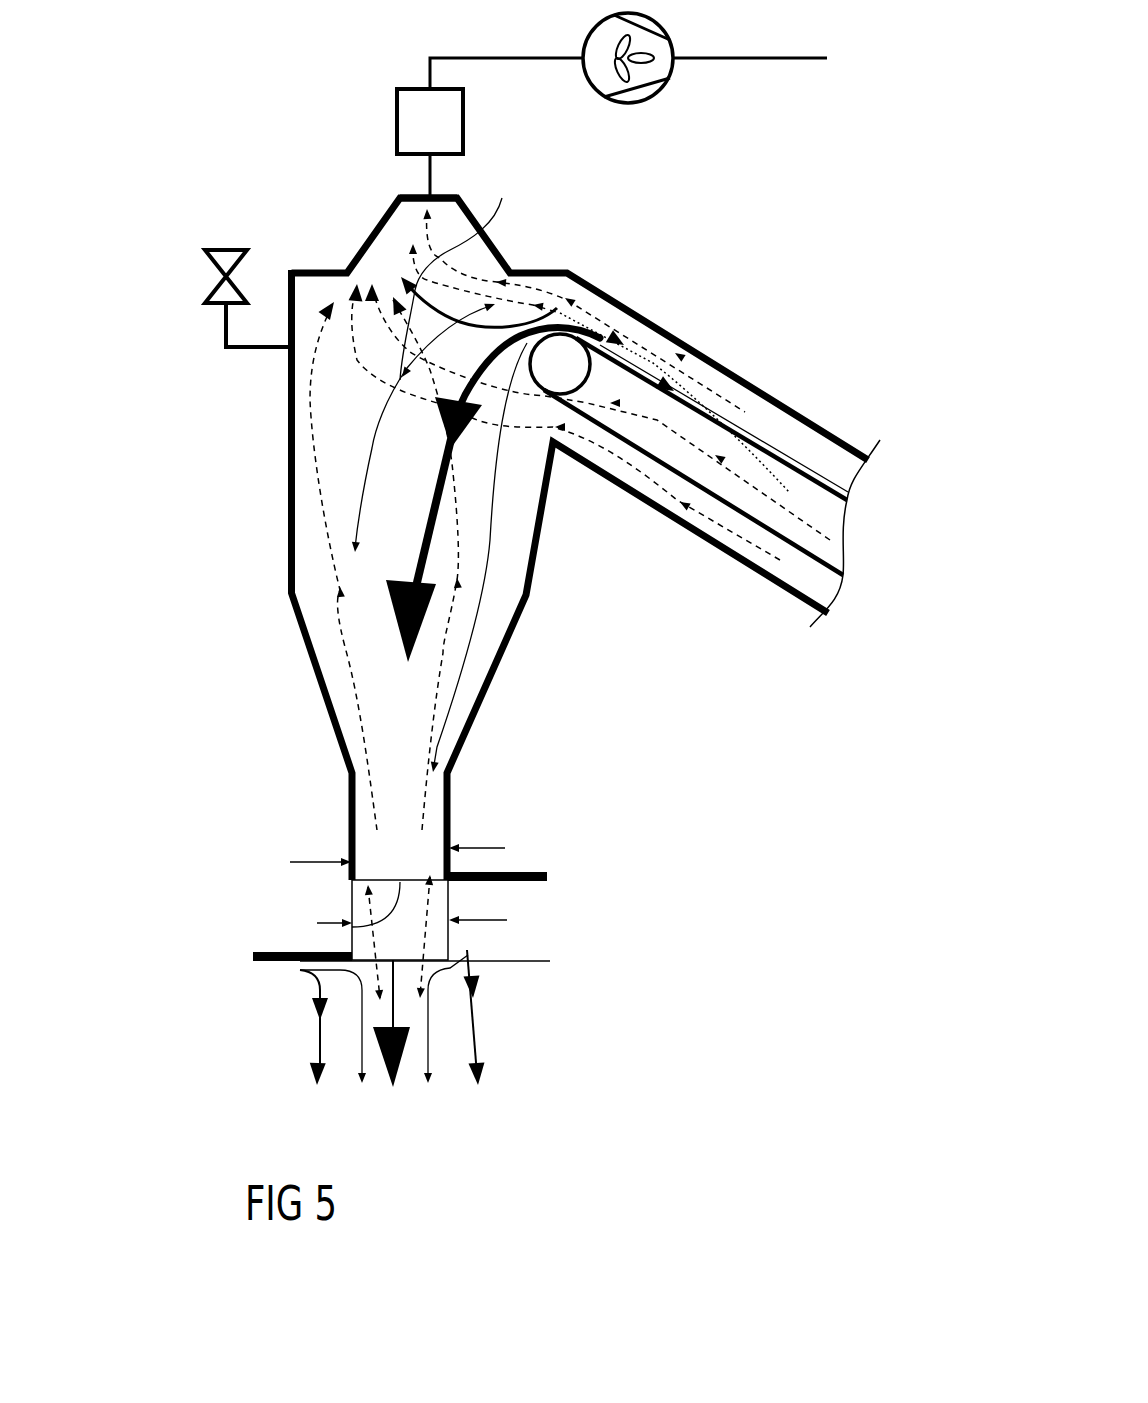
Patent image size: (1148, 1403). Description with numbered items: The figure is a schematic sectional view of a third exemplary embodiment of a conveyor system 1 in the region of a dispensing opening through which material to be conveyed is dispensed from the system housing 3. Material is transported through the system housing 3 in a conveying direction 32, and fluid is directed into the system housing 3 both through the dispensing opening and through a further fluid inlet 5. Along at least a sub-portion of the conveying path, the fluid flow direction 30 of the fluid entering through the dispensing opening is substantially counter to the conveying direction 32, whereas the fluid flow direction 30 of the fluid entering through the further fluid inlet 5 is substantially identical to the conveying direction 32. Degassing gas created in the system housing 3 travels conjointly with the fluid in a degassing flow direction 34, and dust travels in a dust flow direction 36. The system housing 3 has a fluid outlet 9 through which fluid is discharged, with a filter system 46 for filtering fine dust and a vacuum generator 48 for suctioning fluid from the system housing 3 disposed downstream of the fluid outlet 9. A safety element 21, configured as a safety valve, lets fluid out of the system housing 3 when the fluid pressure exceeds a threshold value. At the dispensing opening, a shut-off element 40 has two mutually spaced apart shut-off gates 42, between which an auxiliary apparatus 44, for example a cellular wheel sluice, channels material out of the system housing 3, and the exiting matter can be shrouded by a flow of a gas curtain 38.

The conveyor system 1 is at (260, 95).
The system housing 3 is at (657, 323).
The fluid inlet 5 is at (340, 923).
The fluid outlet 9 is at (418, 196).
The safety element 21 is at (217, 267).
The fluid flow direction 30 is at (540, 275).
The conveying direction 32 is at (430, 528).
The degassing flow direction 34 is at (595, 327).
The dust flow direction 36 is at (372, 448).
The gas curtain 38 is at (312, 1023).
The shut-off element 40 is at (556, 876).
The shut-off gates 42 is at (528, 872).
The auxiliary apparatus 44 is at (350, 893).
The filter system 46 is at (397, 113).
The vacuum generator 48 is at (668, 62).